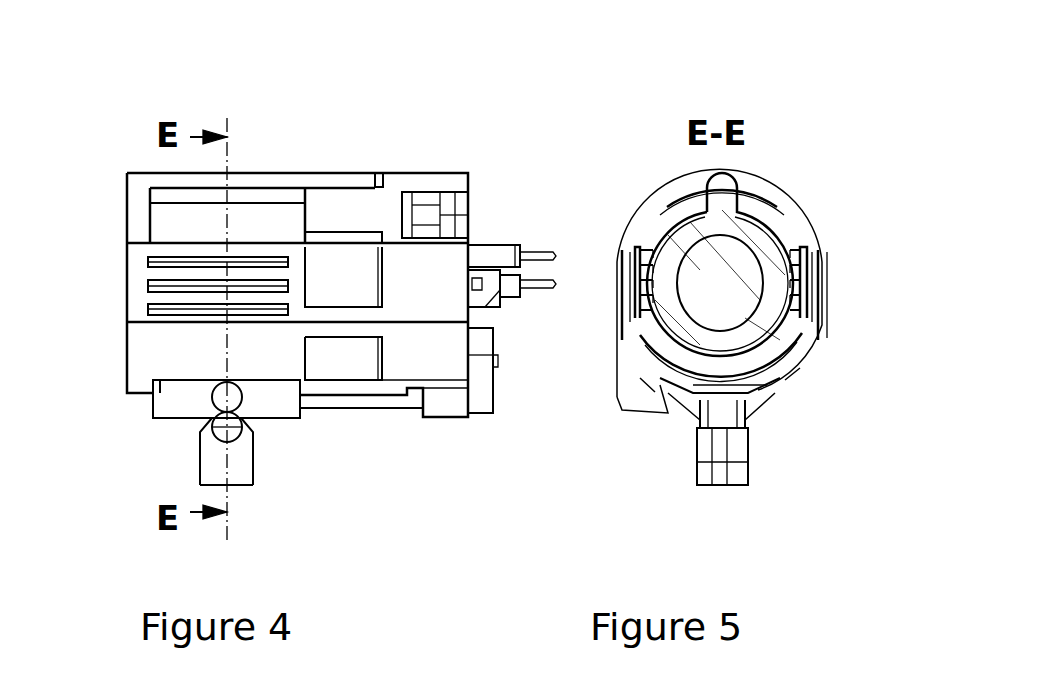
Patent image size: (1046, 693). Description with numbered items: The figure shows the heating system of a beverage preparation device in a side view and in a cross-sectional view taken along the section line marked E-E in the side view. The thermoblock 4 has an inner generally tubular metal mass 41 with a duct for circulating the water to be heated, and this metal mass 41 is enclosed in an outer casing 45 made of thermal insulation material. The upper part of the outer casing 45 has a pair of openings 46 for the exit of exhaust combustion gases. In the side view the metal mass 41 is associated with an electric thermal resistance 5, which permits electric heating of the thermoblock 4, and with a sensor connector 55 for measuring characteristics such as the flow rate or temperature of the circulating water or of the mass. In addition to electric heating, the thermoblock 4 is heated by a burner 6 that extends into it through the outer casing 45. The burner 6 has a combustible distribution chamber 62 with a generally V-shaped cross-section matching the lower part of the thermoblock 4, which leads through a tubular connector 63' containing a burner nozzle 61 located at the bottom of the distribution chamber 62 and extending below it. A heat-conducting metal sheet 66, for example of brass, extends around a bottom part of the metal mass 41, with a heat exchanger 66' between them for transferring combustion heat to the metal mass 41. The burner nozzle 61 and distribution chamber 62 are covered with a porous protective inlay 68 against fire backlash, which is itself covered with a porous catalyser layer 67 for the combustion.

In FIG. 4, the thermoblock 4 is at (128, 78).
In FIG. 5, the thermoblock 4 is at (790, 88).
In FIG. 4, the electric thermal resistance 5 is at (545, 290).
In FIG. 4, the burner 6 is at (300, 455).
In FIG. 5, the burner 6 is at (652, 472).
In FIG. 4, the metal mass 41 is at (200, 227).
In FIG. 5, the metal mass 41 is at (750, 237).
In FIG. 4, the outer casing 45 is at (280, 198).
In FIG. 5, the outer casing 45 is at (752, 178).
In FIG. 5, the openings 46 is at (665, 200).
In FIG. 4, the sensor connector 55 is at (533, 253).
In FIG. 5, the burner nozzle 61 is at (747, 477).
In FIG. 5, the combustible distribution chamber 62 is at (720, 402).
In FIG. 4, the tubular connector 63' is at (179, 438).
In FIG. 5, the tubular connector 63' is at (688, 479).
In FIG. 5, the metal sheet 66 is at (760, 268).
In FIG. 5, the heat exchanger 66' is at (761, 287).
In FIG. 5, the porous catalyser layer 67 is at (621, 425).
In FIG. 5, the porous protective inlay 68 is at (760, 378).